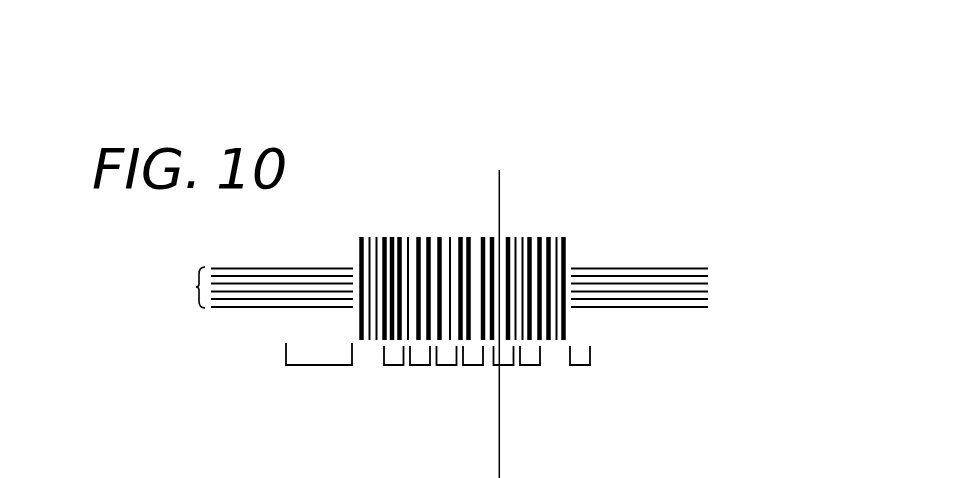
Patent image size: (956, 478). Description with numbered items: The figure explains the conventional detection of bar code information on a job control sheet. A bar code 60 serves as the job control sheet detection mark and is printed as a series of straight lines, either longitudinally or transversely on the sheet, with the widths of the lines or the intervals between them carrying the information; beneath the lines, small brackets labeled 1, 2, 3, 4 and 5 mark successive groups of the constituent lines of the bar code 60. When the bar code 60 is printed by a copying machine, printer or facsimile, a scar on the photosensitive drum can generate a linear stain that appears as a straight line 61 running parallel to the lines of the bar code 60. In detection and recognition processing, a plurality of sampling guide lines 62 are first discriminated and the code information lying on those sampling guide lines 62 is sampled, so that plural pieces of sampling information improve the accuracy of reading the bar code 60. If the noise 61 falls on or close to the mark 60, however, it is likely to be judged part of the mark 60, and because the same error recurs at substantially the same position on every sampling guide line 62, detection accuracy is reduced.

The bar code 60 is at (427, 418).
The straight line 61 is at (500, 466).
The sampling guide lines 62 is at (716, 266).
The bar group 1 is at (394, 371).
The bar group 2 is at (420, 371).
The bar group 3 is at (447, 371).
The bar group 4 is at (473, 371).
The bar group 5 is at (505, 371).